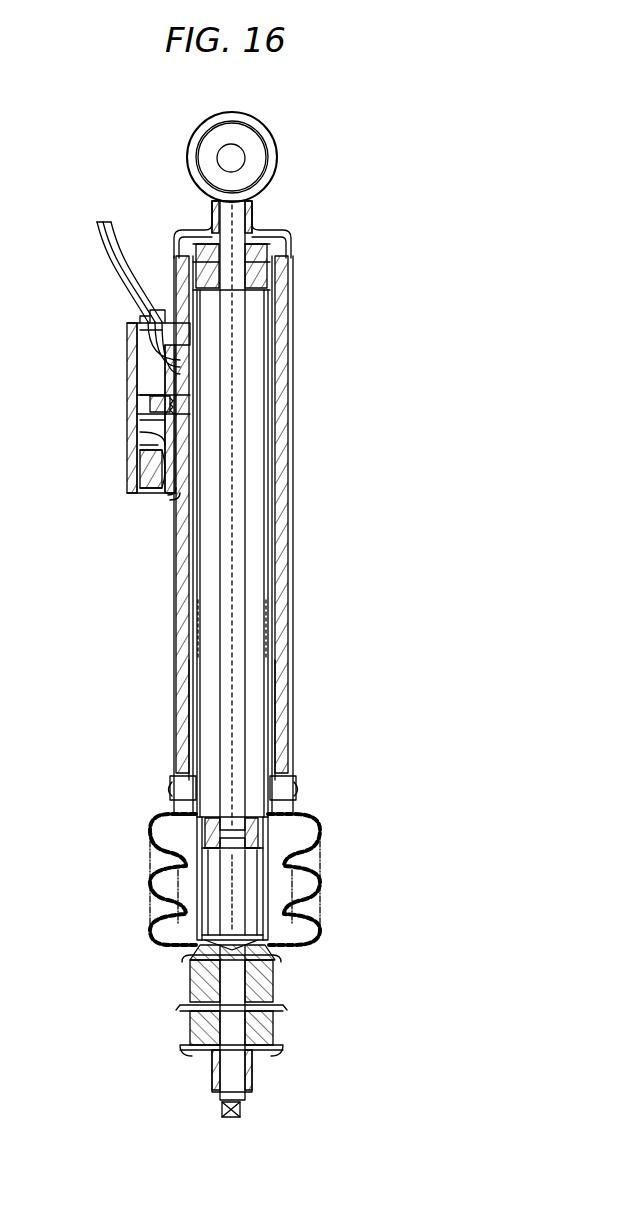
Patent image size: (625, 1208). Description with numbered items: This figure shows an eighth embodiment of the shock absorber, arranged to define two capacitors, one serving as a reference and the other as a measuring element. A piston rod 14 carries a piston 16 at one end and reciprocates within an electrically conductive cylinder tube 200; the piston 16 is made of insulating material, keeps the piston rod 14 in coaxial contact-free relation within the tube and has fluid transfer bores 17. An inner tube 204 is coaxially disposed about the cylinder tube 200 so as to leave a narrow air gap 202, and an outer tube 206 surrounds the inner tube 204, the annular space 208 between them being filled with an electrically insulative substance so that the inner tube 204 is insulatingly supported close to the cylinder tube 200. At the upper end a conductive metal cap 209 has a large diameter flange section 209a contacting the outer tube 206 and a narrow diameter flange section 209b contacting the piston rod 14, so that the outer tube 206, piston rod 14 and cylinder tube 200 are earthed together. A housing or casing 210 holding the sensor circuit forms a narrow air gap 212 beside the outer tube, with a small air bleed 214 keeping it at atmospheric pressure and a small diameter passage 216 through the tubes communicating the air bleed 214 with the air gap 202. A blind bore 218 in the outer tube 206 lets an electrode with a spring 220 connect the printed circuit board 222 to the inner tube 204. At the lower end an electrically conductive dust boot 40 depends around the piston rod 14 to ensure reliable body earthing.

The piston rod 14 is at (230, 728).
The piston 16 is at (258, 836).
The fluid transfer bores 17 is at (262, 813).
The dust boot 40 is at (150, 859).
The cylinder tube 200 is at (197, 701).
The air gap 202 is at (205, 666).
The inner tube 204 is at (200, 633).
The outer tube 206 is at (197, 601).
The annular space 208 is at (185, 579).
The conductive metal cap 209 is at (200, 237).
The large diameter flange section 209a is at (291, 251).
The narrow diameter flange section 209b is at (252, 216).
The housing or casing 210 is at (145, 496).
The air gap 212 is at (130, 346).
The air bleed 214 is at (160, 491).
The small diameter passage 216 is at (172, 323).
The blind bore 218 is at (150, 422).
The spring 220 is at (158, 401).
The printed circuit board 222 is at (135, 471).